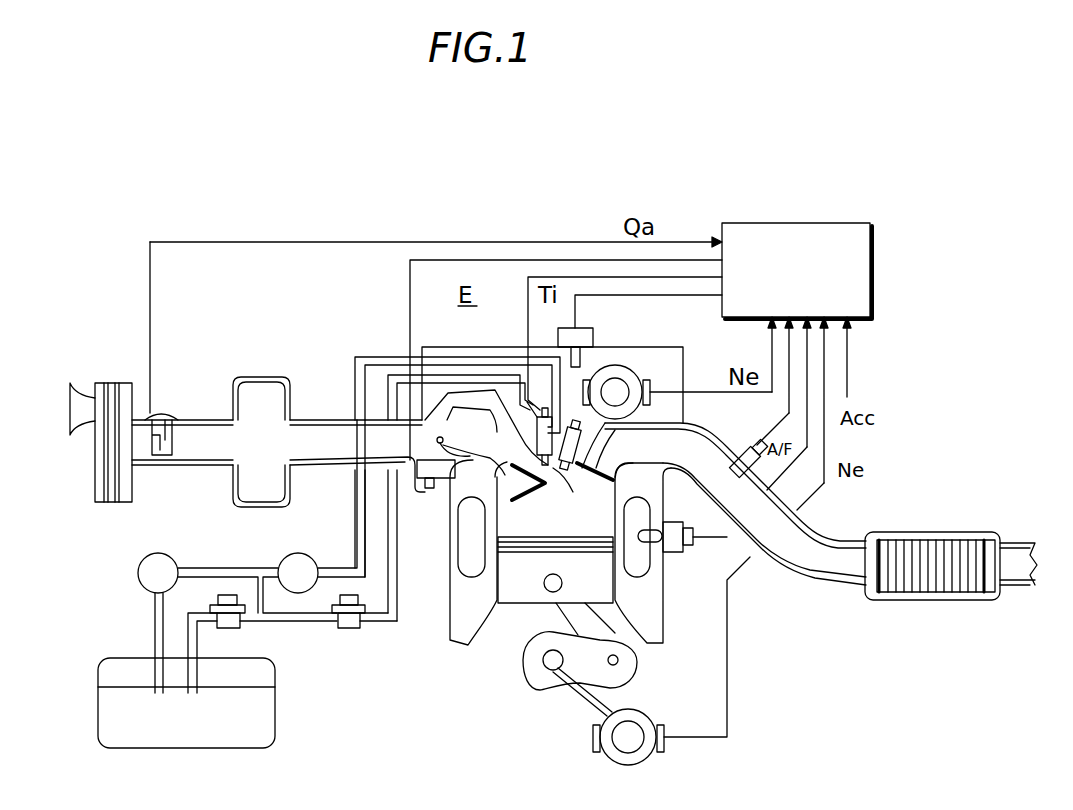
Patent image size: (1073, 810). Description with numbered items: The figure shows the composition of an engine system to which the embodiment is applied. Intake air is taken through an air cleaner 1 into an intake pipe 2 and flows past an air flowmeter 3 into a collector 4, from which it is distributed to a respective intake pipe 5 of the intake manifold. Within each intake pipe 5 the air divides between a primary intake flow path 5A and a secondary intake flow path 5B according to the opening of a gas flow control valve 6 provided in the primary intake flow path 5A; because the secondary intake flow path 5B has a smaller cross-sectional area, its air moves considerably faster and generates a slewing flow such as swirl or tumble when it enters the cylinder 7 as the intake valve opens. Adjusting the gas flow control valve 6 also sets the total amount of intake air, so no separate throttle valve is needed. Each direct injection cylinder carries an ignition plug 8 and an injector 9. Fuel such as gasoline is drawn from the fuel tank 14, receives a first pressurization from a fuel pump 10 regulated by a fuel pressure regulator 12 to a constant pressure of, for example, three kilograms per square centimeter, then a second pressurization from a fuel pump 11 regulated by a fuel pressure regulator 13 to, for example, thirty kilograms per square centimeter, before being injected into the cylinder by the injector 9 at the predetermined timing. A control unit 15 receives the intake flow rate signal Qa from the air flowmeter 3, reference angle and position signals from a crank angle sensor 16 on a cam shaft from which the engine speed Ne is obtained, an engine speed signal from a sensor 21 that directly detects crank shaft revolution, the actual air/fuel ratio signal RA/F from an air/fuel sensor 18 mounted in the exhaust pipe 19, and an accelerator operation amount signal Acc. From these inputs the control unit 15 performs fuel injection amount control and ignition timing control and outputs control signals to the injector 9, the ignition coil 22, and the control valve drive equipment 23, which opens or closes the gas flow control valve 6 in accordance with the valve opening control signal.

The air cleaner 1 is at (110, 381).
The intake pipe 2 is at (166, 410).
The air flowmeter 3 is at (215, 453).
The collector 4 is at (262, 390).
The intake pipe 5 is at (339, 453).
The primary intake flow path 5A is at (482, 450).
The secondary intake flow path 5B is at (472, 403).
The gas flow control valve 6 is at (470, 456).
The engine cylinder 7 is at (515, 487).
The ignition plug 8 is at (572, 468).
The injector 9 is at (548, 468).
The fuel pump 10 is at (161, 553).
The fuel pump 11 is at (303, 553).
The fuel pressure regulator 12 is at (233, 630).
The fuel pressure regulator 13 is at (350, 628).
The fuel tank 14 is at (276, 692).
The control unit 15 is at (873, 285).
The crank angle sensor 16 is at (645, 375).
The air/fuel sensor 18 is at (752, 447).
The exhaust pipe 19 is at (810, 582).
The sensor 21 is at (672, 730).
The ignition coil 22 is at (592, 342).
The control valve drive equipment 23 is at (445, 487).